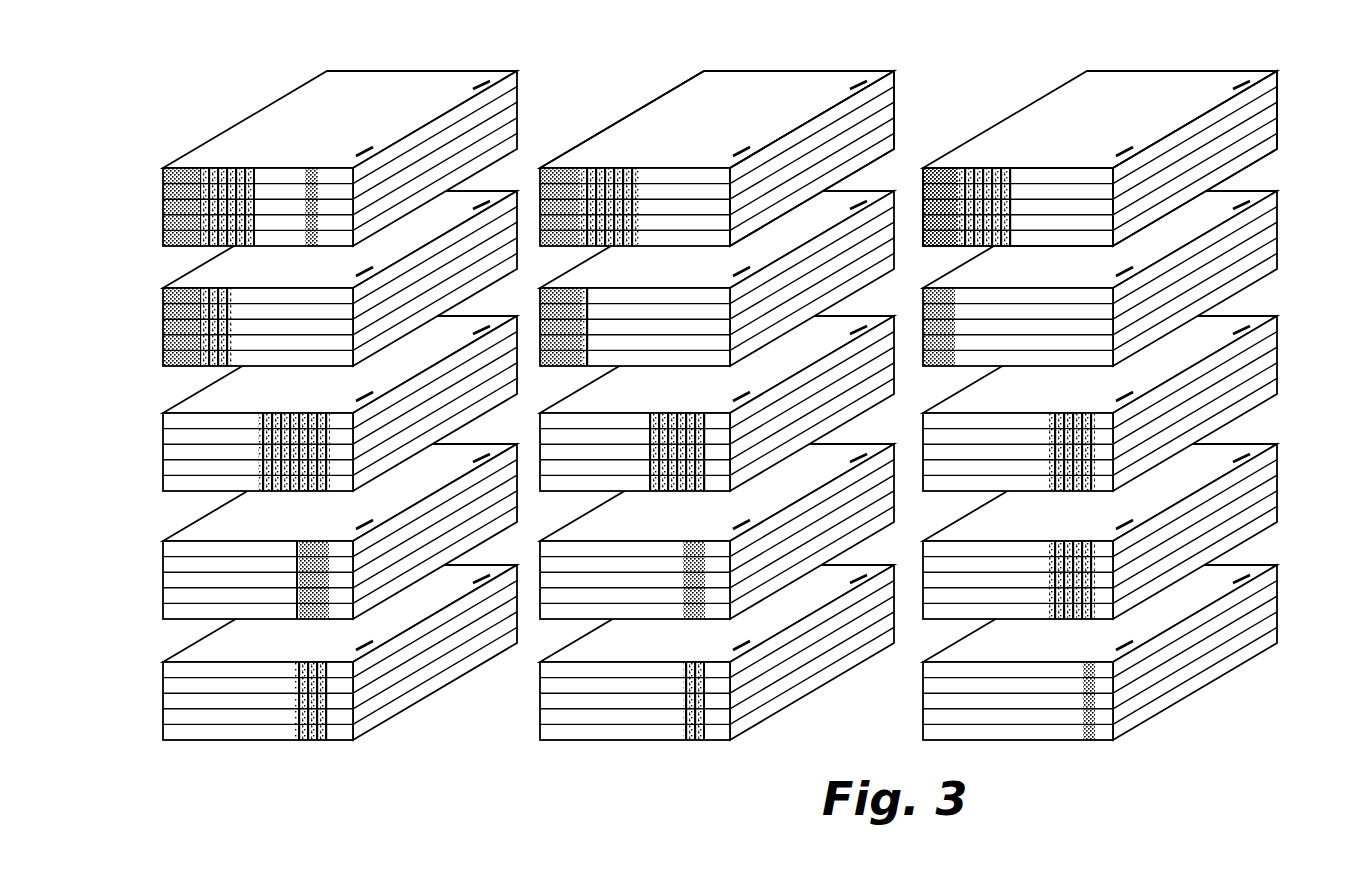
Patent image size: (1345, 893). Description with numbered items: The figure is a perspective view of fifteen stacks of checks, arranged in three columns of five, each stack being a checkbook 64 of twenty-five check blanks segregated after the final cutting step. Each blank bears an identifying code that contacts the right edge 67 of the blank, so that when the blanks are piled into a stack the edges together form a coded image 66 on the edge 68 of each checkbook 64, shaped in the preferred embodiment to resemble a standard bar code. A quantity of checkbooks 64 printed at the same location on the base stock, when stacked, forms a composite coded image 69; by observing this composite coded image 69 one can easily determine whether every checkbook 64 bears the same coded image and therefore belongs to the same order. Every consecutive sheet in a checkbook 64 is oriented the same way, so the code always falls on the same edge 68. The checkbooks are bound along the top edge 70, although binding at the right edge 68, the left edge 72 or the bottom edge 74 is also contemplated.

The checkbook 64 is at (420, 89).
The coded image 66 is at (945, 163).
The right edge of blank 67 is at (1030, 165).
The edge of checkbook 68 is at (670, 176).
The composite coded image 69 is at (909, 174).
The top edge 70 is at (896, 75).
The left edge 72 is at (823, 70).
The bottom edge 74 is at (655, 104).